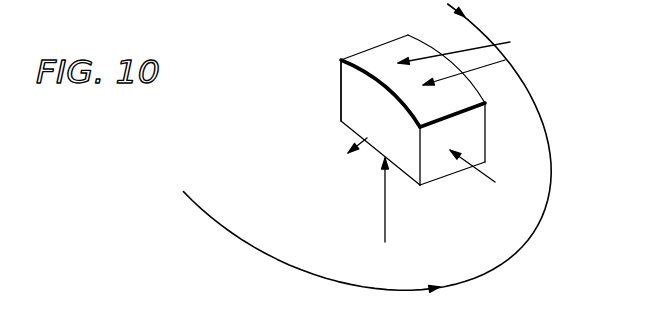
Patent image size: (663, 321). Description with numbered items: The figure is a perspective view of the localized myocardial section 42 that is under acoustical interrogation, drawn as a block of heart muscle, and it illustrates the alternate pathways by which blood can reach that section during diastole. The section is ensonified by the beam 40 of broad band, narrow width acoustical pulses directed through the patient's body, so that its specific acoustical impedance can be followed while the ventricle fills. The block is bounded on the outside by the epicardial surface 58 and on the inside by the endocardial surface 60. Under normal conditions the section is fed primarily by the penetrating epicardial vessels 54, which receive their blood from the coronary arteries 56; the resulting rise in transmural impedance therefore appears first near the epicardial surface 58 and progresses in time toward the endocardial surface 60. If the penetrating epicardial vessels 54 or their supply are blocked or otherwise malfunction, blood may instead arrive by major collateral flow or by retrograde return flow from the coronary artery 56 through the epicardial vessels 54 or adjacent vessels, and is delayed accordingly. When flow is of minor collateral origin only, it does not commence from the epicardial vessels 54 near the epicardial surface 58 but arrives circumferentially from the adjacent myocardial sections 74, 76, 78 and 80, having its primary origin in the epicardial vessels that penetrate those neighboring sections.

The beam 40 is at (385, 123).
The localized section of the myocardium 42 is at (433, 163).
The penetrating epicardial vessels 54 is at (454, 63).
The coronary arteries 56 is at (500, 41).
The epicardial surface 58 is at (487, 122).
The endocardial surface 60 is at (341, 93).
The adjacent myocardial section 74 is at (362, 52).
The adjacent myocardial section 76 is at (482, 169).
The adjacent myocardial section 78 is at (386, 58).
The adjacent myocardial section 80 is at (384, 218).